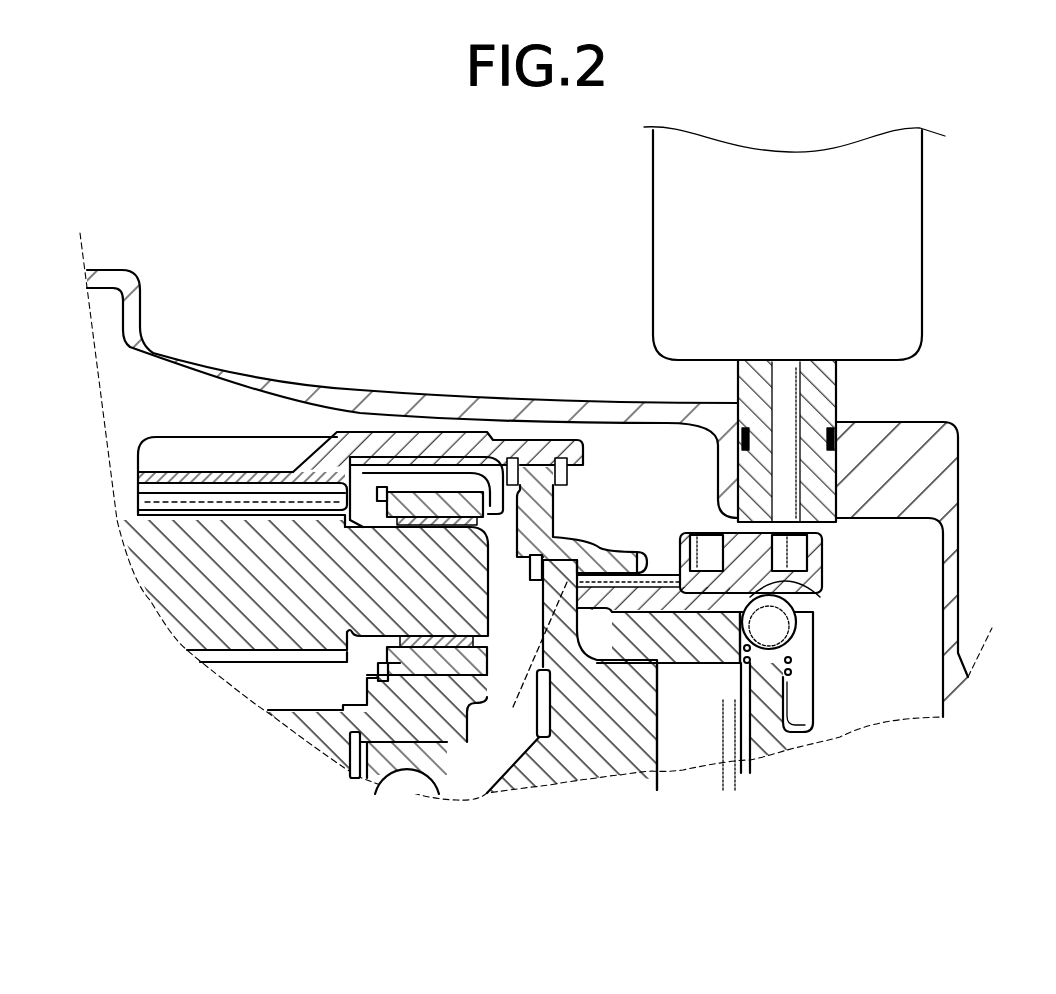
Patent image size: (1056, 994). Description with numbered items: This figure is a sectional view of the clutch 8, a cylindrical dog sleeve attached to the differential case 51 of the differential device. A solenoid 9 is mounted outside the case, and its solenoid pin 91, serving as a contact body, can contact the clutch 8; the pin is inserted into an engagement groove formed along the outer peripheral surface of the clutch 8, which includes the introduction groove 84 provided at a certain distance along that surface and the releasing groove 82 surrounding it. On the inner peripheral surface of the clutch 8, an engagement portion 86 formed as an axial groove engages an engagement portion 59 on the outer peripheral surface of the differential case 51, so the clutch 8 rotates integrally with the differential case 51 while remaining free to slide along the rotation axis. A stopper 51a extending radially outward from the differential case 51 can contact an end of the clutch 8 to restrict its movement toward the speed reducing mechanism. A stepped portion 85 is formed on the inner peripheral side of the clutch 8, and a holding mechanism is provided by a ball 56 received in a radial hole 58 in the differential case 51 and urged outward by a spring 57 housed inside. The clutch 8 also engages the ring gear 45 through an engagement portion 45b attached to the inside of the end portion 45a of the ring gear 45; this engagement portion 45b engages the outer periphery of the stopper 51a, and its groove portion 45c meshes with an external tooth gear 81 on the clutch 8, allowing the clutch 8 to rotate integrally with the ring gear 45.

The clutch 8 is at (823, 535).
The solenoid 9 is at (765, 247).
The ring gear 45 is at (237, 455).
The end portion 45a is at (530, 430).
The engagement portion 45b is at (555, 540).
The groove portion 45c is at (467, 662).
The differential case 51 is at (600, 758).
The stopper 51a is at (540, 580).
The ball 56 is at (810, 626).
The spring 57 is at (788, 655).
The hole 58 is at (812, 684).
The engagement portion 59 is at (703, 650).
The external tooth gear 81 is at (625, 545).
The releasing groove 82 is at (692, 533).
The introduction groove 84 is at (810, 555).
The stepped portion 85 is at (787, 590).
The engagement portion 86 is at (657, 597).
The solenoid pin 91 is at (795, 432).